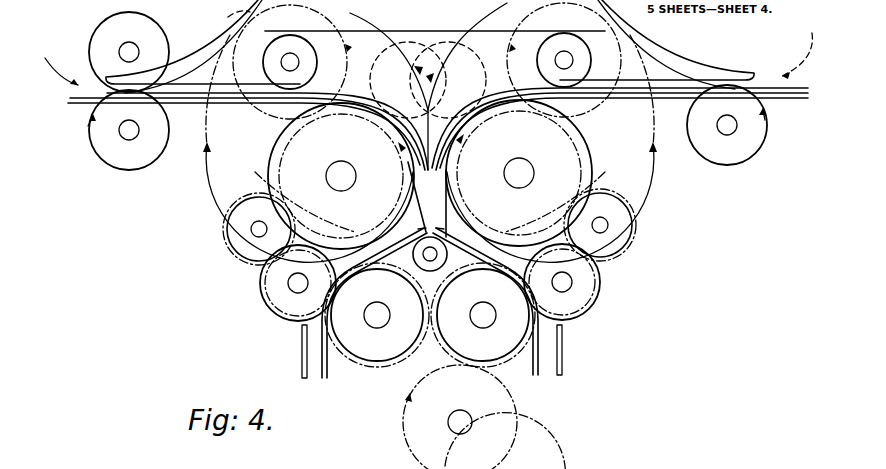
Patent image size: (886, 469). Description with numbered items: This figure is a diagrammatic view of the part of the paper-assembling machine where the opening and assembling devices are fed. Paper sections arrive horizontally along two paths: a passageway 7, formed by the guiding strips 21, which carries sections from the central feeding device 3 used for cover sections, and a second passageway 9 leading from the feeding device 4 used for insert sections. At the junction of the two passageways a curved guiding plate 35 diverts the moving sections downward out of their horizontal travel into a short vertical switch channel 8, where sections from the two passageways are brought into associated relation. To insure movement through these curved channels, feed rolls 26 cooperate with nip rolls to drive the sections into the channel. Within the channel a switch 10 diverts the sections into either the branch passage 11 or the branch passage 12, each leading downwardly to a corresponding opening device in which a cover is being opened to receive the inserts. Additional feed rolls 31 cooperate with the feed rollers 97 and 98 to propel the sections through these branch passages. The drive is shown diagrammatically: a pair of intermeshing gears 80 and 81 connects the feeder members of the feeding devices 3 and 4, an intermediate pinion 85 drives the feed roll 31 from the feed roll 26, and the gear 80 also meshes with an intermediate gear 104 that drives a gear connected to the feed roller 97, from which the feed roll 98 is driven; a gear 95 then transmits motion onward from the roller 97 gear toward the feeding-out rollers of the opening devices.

The feeding device 3 is at (236, 85).
The feeding device 4 is at (622, 85).
The passageway 7 is at (190, 96).
The switch channel 8 is at (417, 197).
The second passageway 9 is at (677, 96).
The switch 10 is at (437, 217).
The passage 11 is at (300, 370).
The passage 12 is at (563, 378).
The guiding strips 21 is at (78, 107).
The feed rolls 26 is at (267, 173).
The feed rolls 31 is at (270, 305).
The curved guiding plate 35 is at (427, 86).
The gear 80 is at (212, 165).
The gear 81 is at (634, 176).
The intermediate pinion 85 is at (225, 247).
The gear 95 is at (518, 427).
The feed roller 97 is at (508, 357).
The feed roll 98 is at (372, 363).
The intermediate gear 104 is at (353, 265).